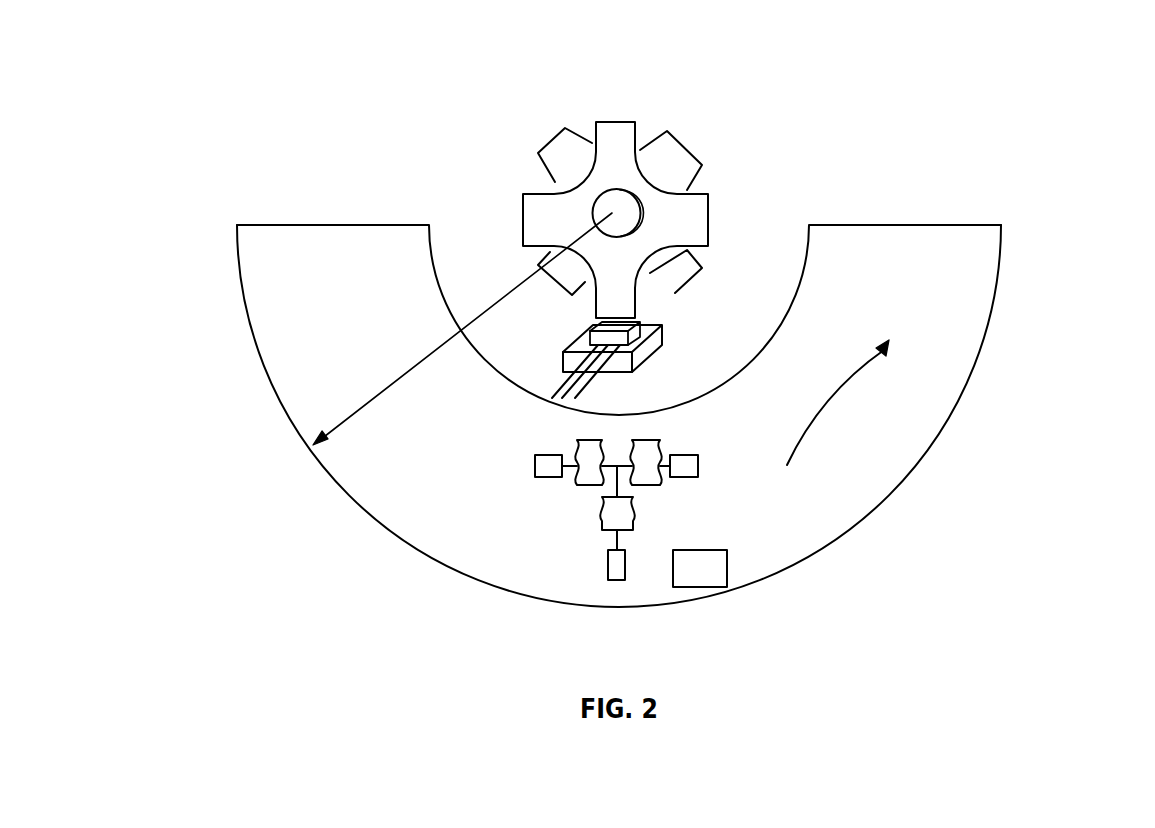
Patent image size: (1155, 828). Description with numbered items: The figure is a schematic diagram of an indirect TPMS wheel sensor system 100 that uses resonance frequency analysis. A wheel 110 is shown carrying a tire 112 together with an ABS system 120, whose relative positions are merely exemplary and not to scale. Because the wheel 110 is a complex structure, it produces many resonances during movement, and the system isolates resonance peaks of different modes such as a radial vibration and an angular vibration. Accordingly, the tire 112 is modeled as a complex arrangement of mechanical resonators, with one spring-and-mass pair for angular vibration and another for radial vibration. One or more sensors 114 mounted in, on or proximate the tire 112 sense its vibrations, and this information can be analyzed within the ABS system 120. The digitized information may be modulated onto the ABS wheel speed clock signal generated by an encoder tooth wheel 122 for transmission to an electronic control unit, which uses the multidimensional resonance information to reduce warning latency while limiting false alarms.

The indirect TPMS wheel sensor system 100 is at (413, 124).
The wheel 110 is at (962, 270).
The tire 112 is at (952, 402).
The sensors 114 is at (712, 573).
The ABS system 120 is at (641, 341).
The encoder tooth wheel 122 is at (662, 155).